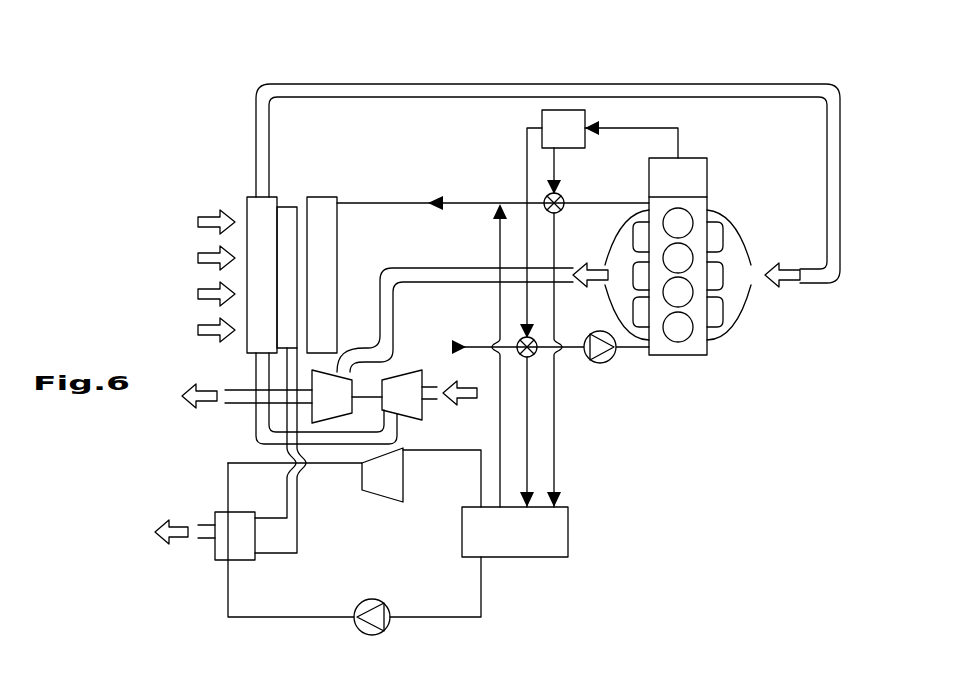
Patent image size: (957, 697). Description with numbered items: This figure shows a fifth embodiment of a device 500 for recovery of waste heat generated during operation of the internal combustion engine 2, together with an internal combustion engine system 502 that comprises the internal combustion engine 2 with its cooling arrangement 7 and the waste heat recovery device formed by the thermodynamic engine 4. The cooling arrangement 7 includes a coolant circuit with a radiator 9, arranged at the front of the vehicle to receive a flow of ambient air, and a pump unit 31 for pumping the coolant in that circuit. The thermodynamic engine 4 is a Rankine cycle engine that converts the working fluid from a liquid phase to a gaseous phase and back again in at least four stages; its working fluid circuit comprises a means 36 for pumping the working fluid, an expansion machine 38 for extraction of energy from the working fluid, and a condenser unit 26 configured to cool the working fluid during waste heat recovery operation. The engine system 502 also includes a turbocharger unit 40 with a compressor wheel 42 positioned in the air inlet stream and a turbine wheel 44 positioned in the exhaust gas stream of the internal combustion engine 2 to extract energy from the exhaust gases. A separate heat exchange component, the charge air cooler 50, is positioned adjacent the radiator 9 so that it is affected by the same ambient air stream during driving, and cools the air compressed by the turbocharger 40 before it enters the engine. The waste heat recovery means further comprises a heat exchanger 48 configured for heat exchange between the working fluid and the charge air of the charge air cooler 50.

The internal combustion engine 2 is at (700, 205).
The thermodynamic engine 4 is at (528, 620).
The cooling arrangement 7 is at (396, 180).
The radiator 9 is at (323, 197).
The condenser unit 26 is at (568, 540).
The pump unit 31 is at (603, 362).
The means for pumping the working fluid 36 is at (355, 633).
The expansion machine 38 is at (383, 497).
The turbocharger unit 40 is at (406, 358).
The compressor wheel 42 is at (413, 405).
The turbine wheel 44 is at (332, 407).
The heat exchanger 48 is at (220, 548).
The charge air cooler 50 is at (252, 207).
The device for recovery of waste heat 500 is at (757, 70).
The internal combustion engine system 502 is at (862, 95).